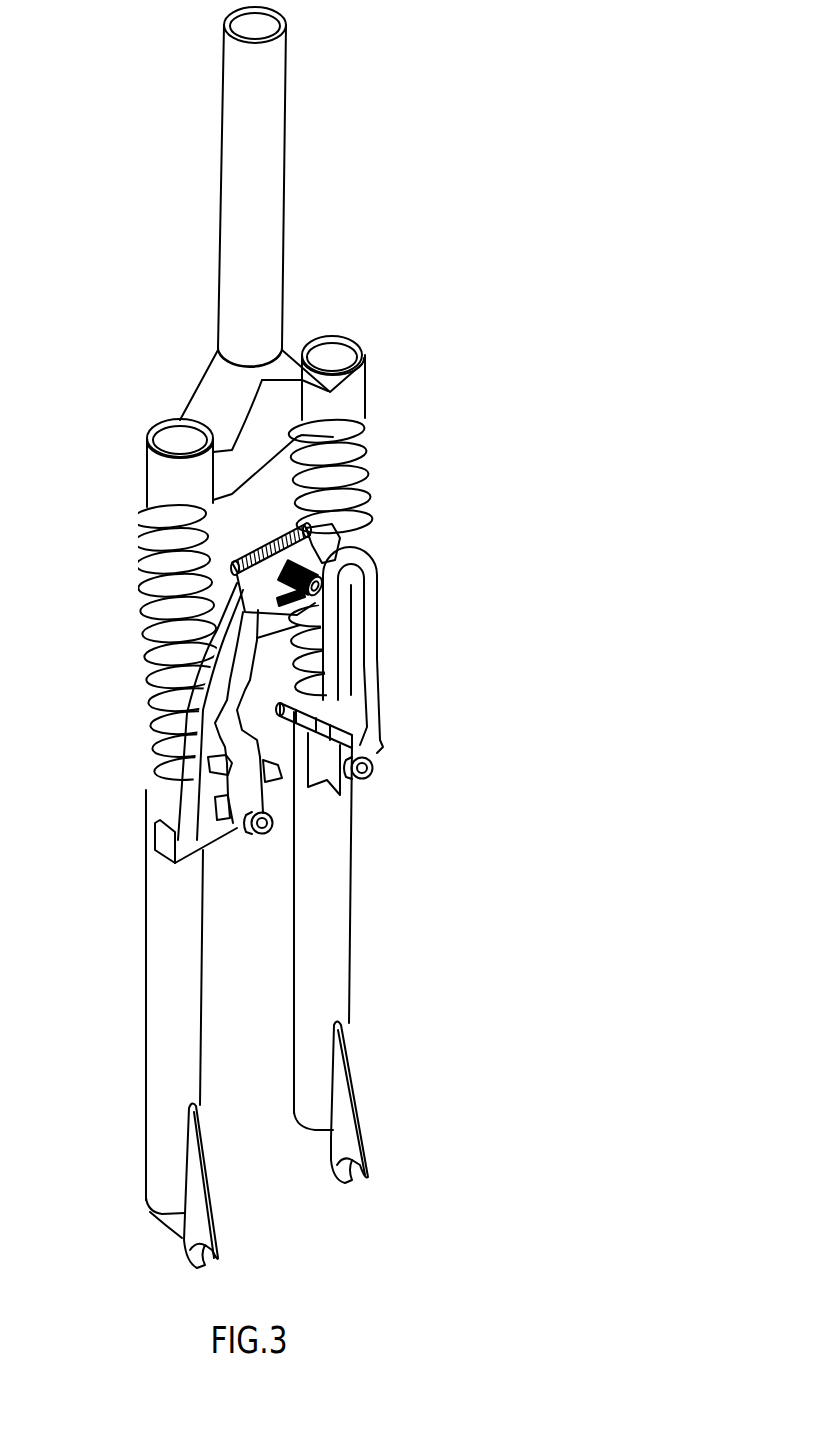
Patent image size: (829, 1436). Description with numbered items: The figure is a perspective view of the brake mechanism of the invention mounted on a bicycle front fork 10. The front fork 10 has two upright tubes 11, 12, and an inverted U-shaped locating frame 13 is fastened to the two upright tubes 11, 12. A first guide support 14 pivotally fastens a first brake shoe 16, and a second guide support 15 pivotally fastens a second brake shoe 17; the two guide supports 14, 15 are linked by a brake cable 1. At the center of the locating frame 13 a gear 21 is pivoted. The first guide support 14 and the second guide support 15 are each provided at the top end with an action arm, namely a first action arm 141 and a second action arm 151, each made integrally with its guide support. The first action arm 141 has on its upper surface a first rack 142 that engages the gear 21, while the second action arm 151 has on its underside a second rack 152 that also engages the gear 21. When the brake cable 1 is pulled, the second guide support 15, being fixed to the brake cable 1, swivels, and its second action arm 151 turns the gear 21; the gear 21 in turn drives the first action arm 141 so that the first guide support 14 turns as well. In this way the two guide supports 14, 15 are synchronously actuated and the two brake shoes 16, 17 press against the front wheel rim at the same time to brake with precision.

The bicycle front fork 10 is at (368, 257).
The brake cable 1 is at (150, 607).
The upright tube 11 is at (160, 1127).
The upright tube 12 is at (343, 967).
The locating frame 13 is at (195, 765).
The first guide support 14 is at (193, 667).
The first action arm 141 is at (252, 647).
The first rack 142 is at (233, 577).
The second guide support 15 is at (332, 609).
The second action arm 151 is at (315, 548).
The second rack 152 is at (333, 560).
The first brake shoe 16 is at (282, 780).
The second brake shoe 17 is at (342, 727).
The gear 21 is at (327, 573).